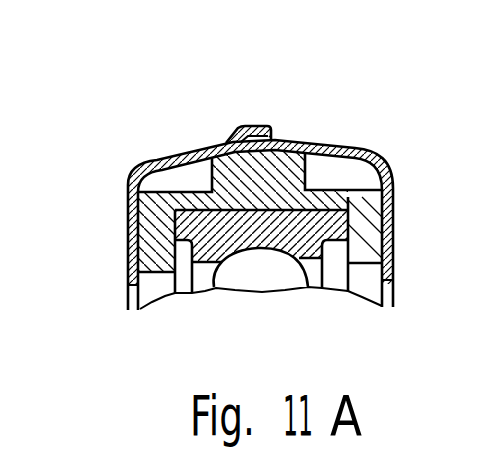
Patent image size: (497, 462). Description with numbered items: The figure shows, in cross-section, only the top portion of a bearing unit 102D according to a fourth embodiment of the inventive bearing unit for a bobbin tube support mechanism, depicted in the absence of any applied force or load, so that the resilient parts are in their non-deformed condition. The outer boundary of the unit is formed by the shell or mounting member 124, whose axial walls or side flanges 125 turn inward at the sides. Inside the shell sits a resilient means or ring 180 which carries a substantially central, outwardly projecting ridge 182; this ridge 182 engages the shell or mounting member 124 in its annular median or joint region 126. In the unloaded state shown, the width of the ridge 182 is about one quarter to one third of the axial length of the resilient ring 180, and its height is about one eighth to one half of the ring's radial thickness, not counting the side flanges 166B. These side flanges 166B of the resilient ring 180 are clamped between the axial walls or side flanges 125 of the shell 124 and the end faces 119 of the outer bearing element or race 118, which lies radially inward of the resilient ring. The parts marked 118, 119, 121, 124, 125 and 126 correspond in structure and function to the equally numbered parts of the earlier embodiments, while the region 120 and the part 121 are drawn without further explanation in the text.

The bearing unit 102D is at (110, 263).
The shell or mounting member 124 is at (164, 137).
The inner recess 121 is at (179, 162).
The annular median or joint region 126 is at (261, 113).
The ridge 182 is at (285, 172).
The end faces 119 is at (127, 193).
The resilient means or ring 180 is at (384, 188).
The axial walls or side flanges 125 is at (358, 201).
The outer bearing element or race 118 is at (376, 217).
The side flanges 166B is at (360, 250).
The domed cavity 120 is at (263, 277).